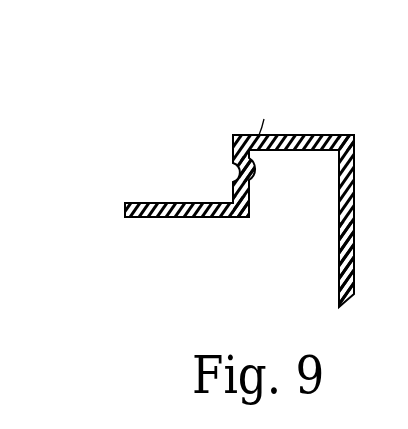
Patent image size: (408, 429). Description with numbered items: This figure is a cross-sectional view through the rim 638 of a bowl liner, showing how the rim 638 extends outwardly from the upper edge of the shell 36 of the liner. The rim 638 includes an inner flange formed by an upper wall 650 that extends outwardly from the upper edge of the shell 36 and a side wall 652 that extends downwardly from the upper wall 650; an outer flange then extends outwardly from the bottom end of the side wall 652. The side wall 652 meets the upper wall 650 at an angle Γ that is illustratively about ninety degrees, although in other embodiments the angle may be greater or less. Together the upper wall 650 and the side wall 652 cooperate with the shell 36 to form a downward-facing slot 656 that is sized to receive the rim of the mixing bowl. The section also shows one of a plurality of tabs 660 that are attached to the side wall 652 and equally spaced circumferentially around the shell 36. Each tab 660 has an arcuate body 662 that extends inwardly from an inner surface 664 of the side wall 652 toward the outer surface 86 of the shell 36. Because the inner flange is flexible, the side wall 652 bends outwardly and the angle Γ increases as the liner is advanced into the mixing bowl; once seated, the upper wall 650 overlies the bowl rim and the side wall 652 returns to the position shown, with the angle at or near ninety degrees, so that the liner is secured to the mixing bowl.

The rim 638 is at (218, 106).
The upper wall 650 is at (306, 135).
The side wall 652 is at (146, 203).
The tab 660 is at (253, 166).
The arcuate body 662 is at (253, 185).
The inner surface 664 is at (249, 196).
The downward-facing slot 656 is at (290, 228).
The shell 36 is at (354, 204).
The outer surface 86 is at (339, 232).